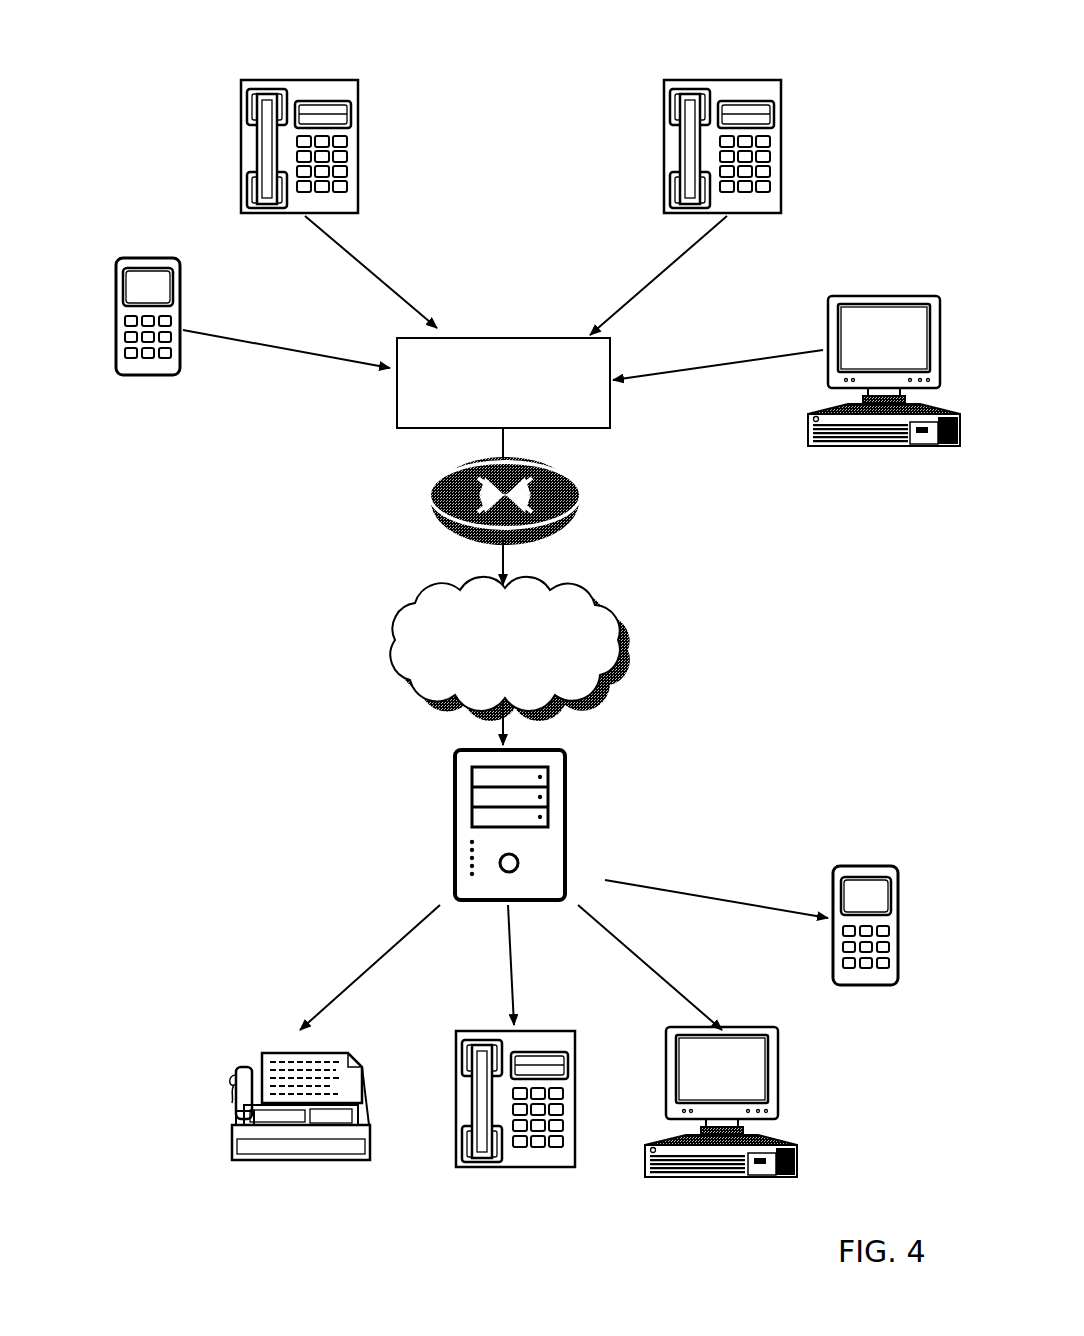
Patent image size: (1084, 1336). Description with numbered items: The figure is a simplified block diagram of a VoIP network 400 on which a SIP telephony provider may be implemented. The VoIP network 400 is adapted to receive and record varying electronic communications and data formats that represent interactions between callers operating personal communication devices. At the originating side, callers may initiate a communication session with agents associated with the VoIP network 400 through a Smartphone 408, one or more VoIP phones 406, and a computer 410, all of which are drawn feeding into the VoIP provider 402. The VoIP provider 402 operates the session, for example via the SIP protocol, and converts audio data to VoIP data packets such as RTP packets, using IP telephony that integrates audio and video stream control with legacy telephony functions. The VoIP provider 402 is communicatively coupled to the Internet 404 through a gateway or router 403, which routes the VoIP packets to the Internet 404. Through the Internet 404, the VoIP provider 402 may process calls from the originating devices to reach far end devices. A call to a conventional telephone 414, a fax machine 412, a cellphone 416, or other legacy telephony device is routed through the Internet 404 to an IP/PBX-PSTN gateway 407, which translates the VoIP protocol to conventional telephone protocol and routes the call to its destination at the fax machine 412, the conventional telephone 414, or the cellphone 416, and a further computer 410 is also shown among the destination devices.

The VoIP network 400 is at (167, 38).
The VoIP provider 402 is at (503, 383).
The router 403 is at (434, 492).
The Internet 404 is at (510, 649).
The VoIP phone 406 is at (241, 128).
The IP/PBX-PSTN gateway 407 is at (432, 836).
The Smartphone 408 is at (116, 302).
The computer 410 is at (884, 296).
The fax machine 412 is at (232, 1068).
The conventional telephone 414 is at (456, 1068).
The cellphone 416 is at (848, 866).